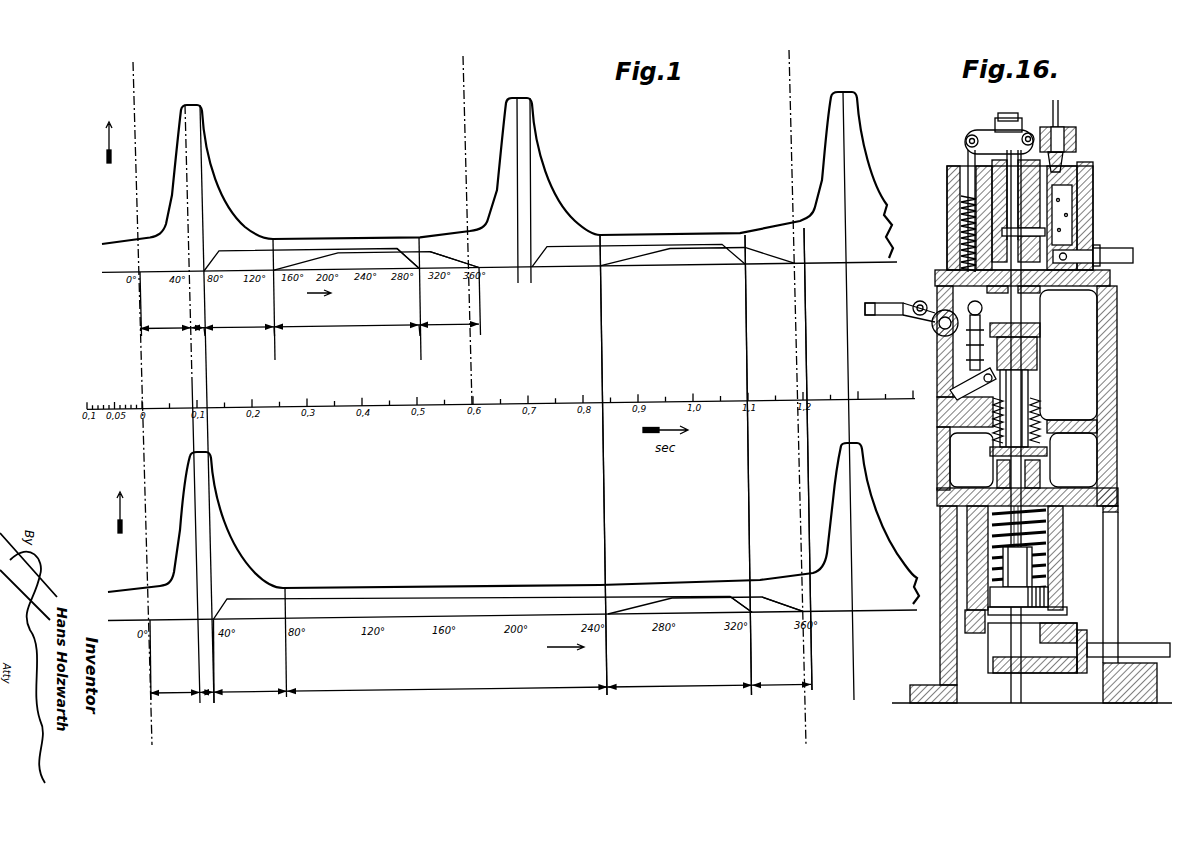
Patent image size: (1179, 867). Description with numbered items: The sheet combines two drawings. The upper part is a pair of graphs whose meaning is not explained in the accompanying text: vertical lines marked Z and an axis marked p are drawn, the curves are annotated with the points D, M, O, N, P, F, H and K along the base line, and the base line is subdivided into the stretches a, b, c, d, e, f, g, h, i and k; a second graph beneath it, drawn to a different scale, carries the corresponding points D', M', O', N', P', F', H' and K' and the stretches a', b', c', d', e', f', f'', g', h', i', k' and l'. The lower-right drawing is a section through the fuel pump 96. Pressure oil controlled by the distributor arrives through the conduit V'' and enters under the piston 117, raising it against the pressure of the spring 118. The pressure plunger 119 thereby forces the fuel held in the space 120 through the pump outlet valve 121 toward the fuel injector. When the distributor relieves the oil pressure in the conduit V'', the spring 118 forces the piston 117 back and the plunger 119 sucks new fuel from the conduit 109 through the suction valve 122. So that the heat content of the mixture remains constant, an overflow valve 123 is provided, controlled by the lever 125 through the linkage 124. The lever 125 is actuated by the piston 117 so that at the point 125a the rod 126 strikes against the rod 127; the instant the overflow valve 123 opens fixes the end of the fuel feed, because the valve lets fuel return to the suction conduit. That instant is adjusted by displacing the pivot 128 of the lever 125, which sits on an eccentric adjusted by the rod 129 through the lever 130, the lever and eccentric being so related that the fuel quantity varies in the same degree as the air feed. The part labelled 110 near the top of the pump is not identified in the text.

In FIG. 1, the ignition point line Z is at (466, 389).
In FIG. 1, the pressure axis p is at (112, 315).
In FIG. 1, the valve opening point D is at (200, 404).
In FIG. 1, the valve lift diagram M is at (311, 243).
In FIG. 1, the second valve lift diagram O is at (376, 240).
In FIG. 1, the valve closing start N is at (398, 238).
In FIG. 1, the valve closing start P is at (451, 237).
In FIG. 1, the opening point F is at (265, 299).
In FIG. 1, the closing point H is at (409, 298).
In FIG. 1, the closing point K is at (492, 301).
In FIG. 1, the dimension point a is at (126, 315).
In FIG. 1, the interval b is at (165, 319).
In FIG. 1, the interval c is at (197, 318).
In FIG. 1, the dimension point d is at (215, 343).
In FIG. 1, the interval e is at (239, 319).
In FIG. 1, the dimension point f is at (266, 343).
In FIG. 1, the interval g is at (346, 318).
In FIG. 1, the dimension point h is at (410, 341).
In FIG. 1, the interval i is at (449, 316).
In FIG. 1, the dimension point k is at (486, 339).
In FIG. 1, the valve opening point D' is at (206, 661).
In FIG. 1, the valve lift diagram M' is at (483, 595).
In FIG. 1, the second valve lift diagram O' is at (705, 582).
In FIG. 1, the valve closing start N' is at (730, 581).
In FIG. 1, the valve closing start P' is at (781, 580).
In FIG. 1, the opening point F' is at (619, 465).
In FIG. 1, the closing point H' is at (763, 465).
In FIG. 1, the closing point K' is at (831, 459).
In FIG. 1, the dimension point a' is at (135, 670).
In FIG. 1, the interval b' is at (175, 684).
In FIG. 1, the interval c' is at (207, 683).
In FIG. 1, the dimension point d' is at (228, 709).
In FIG. 1, the interval e' is at (251, 683).
In FIG. 1, the dimension point f' is at (296, 657).
In FIG. 1, the dimension point f'' is at (599, 705).
In FIG. 1, the interval g' is at (680, 678).
In FIG. 1, the dimension point h' is at (744, 703).
In FIG. 1, the interval i' is at (781, 676).
In FIG. 1, the dimension point k' is at (825, 701).
In FIG. 1, the interval l' is at (447, 681).
In FIG. 16, the fuel pump 96 is at (1055, 282).
In FIG. 16, the conduit 109 is at (1125, 263).
In FIG. 16, the adjusting rod 110 is at (1060, 114).
In FIG. 16, the piston 117 is at (1035, 596).
In FIG. 16, the spring 118 is at (1048, 540).
In FIG. 16, the pressure plunger 119 is at (1023, 302).
In FIG. 16, the space 120 is at (1002, 232).
In FIG. 16, the pump outlet valve 121 is at (1078, 203).
In FIG. 16, the suction valve 122 is at (1077, 233).
In FIG. 16, the overflow valve 123 is at (973, 212).
In FIG. 16, the linkage 124 is at (987, 137).
In FIG. 16, the lever 125 is at (963, 348).
In FIG. 16, the point 125a is at (938, 297).
In FIG. 16, the rod 126 is at (986, 335).
In FIG. 16, the rod 127 is at (960, 252).
In FIG. 16, the pivot 128 is at (938, 336).
In FIG. 16, the rod 129 is at (876, 316).
In FIG. 16, the lever 130 is at (920, 326).
In FIG. 16, the conduit V'' is at (1128, 637).